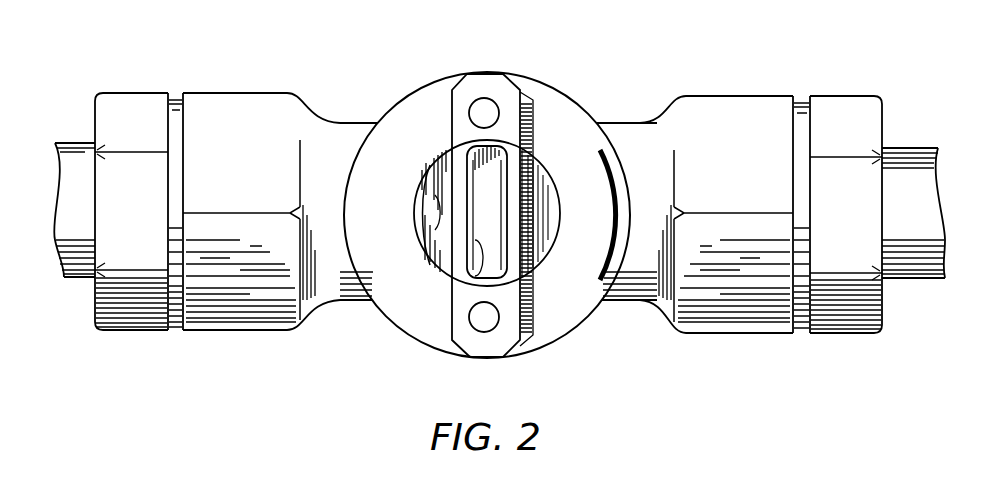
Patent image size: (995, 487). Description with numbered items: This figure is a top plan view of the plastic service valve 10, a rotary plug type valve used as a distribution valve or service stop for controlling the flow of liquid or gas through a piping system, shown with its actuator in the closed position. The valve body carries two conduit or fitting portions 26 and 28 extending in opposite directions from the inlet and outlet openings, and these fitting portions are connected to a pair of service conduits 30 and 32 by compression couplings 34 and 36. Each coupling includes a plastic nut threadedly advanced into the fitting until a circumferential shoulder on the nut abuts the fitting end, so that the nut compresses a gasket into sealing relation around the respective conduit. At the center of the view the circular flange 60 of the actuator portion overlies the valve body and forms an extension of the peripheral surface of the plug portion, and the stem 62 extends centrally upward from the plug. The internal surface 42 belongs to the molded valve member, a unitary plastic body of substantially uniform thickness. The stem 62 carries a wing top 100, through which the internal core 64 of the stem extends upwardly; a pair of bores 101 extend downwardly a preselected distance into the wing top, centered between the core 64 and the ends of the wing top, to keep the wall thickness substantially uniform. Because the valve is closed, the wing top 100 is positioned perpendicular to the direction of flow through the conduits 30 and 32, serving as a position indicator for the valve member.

The service valve 10 is at (556, 80).
The fitting portion 26 is at (258, 100).
The fitting portion 28 is at (706, 103).
The service conduit 30 is at (78, 143).
The service conduit 32 is at (922, 147).
The compression coupling 34 is at (186, 84).
The compression coupling 36 is at (774, 80).
The internal surface 42 is at (437, 207).
The flange 60 is at (583, 117).
The stem 62 is at (515, 226).
The internal core 64 is at (472, 278).
The wing top 100 is at (460, 128).
The bores 101 is at (484, 108).